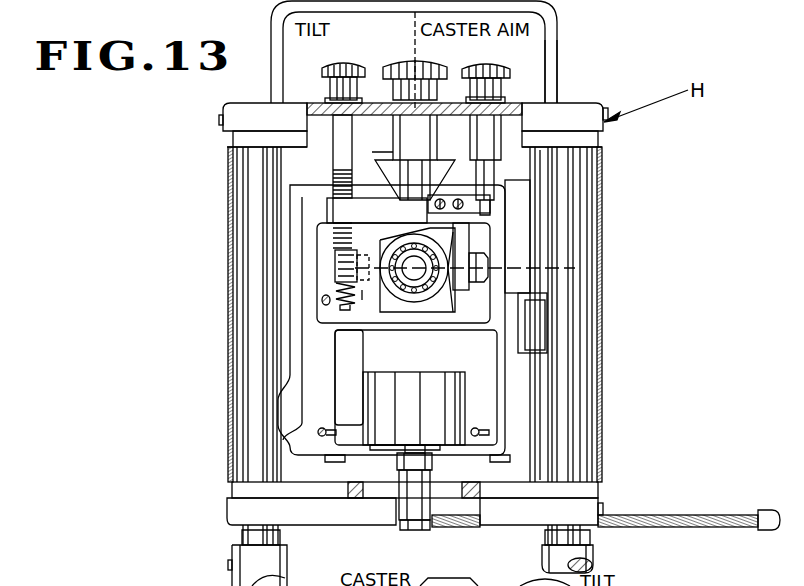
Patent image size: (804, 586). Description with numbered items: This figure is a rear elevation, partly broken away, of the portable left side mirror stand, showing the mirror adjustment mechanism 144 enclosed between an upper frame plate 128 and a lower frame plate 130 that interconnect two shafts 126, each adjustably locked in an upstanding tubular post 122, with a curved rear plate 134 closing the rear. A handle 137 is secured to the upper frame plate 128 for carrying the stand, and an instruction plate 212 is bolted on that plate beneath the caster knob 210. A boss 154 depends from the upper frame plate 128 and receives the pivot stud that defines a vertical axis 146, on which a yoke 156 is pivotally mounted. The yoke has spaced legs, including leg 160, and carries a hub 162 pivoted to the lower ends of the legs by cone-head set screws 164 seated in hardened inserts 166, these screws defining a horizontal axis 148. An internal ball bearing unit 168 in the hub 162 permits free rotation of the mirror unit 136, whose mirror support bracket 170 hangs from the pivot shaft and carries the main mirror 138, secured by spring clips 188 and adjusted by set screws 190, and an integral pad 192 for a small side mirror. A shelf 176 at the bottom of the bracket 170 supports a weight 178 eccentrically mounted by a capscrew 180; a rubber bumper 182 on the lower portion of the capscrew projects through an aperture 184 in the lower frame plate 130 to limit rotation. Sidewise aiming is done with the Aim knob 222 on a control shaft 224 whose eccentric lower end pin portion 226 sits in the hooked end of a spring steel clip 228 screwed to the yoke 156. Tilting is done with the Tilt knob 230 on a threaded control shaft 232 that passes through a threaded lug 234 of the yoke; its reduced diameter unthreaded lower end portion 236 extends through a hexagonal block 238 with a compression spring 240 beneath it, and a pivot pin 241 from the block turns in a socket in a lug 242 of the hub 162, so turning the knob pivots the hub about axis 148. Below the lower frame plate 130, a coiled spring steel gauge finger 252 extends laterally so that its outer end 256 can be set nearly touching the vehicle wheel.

The vertical axis 146 is at (415, 12).
The handle 137 is at (555, 71).
The instruction plate 212 is at (540, 103).
The Tilt knob 230 is at (352, 58).
The caster knob 210 is at (423, 60).
The Aim knob 222 is at (488, 60).
The threaded control shaft 232 is at (333, 130).
The upper frame plate 128 is at (221, 122).
The control shaft 224 is at (495, 183).
The curved rear plate 134 is at (229, 314).
The shaft 126 is at (252, 331).
The lower frame plate 130 is at (232, 512).
The rubber bumper 182 is at (398, 511).
The aperture 184 is at (462, 495).
The capscrew 180 is at (400, 530).
The gauge finger 252 is at (478, 527).
The outer end of the gauge finger 256 is at (764, 530).
The tubular post 122 is at (230, 562).
The mirror unit 136 is at (340, 380).
The mirror support bracket 170 is at (318, 358).
The weight 178 is at (412, 385).
The lug 234 is at (327, 208).
The lug 242 is at (367, 252).
The boss 154 is at (402, 127).
The yoke 156 is at (373, 205).
The mirror adjustment mechanism 144 is at (336, 180).
The reduced diameter unthreaded lower end portion 236 is at (340, 252).
The hexagonal block 238 is at (340, 268).
The compression spring 240 is at (342, 290).
The pivot pin 241 is at (366, 306).
The ball bearing unit 168 is at (406, 293).
The hub 162 is at (422, 298).
The hardened insert 166 is at (455, 285).
The leg 160 is at (458, 280).
The cone-head set screw 164 is at (476, 258).
The eccentric lower end pin portion 226 is at (493, 175).
The spring steel clip 228 is at (490, 198).
The mirror 138 is at (535, 237).
The horizontal axis 148 is at (565, 250).
The pad 192 is at (545, 318).
The set screw 190 is at (322, 436).
The spring clip 188 is at (343, 460).
The shelf 176 is at (437, 444).